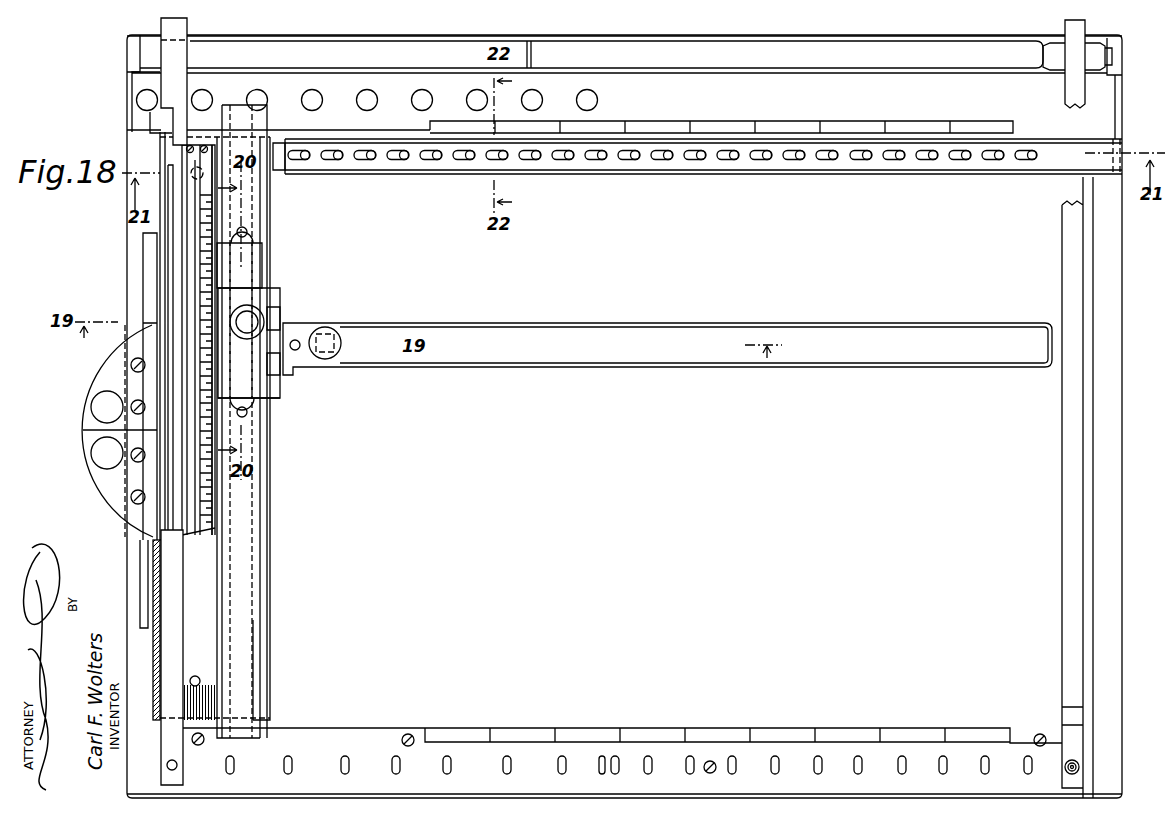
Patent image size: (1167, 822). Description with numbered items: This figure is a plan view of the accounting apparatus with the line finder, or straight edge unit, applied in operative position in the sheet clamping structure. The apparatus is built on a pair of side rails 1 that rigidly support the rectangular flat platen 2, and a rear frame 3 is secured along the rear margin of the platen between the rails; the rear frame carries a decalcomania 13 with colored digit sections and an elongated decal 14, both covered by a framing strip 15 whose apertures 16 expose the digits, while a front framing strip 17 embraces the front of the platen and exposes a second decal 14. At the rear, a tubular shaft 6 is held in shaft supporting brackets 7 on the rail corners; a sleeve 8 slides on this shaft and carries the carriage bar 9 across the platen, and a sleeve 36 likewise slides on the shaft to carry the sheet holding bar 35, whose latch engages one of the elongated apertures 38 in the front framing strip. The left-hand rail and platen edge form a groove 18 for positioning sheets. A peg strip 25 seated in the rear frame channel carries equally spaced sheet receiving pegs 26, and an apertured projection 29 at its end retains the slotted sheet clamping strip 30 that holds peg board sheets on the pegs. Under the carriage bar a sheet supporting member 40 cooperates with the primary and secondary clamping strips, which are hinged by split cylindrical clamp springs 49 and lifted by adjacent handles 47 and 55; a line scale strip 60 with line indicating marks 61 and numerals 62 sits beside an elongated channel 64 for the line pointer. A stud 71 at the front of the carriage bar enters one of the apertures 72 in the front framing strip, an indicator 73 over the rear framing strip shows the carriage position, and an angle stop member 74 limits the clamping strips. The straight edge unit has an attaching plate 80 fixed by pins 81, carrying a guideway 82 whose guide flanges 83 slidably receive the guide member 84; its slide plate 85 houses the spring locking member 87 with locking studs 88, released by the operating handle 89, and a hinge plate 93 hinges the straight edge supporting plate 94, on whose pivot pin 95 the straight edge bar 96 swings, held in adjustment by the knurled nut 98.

The side rails 1 is at (1112, 352).
The platen 2 is at (1043, 456).
The rear frame 3 is at (909, 35).
The tubular shaft 6 is at (855, 52).
The shaft supporting brackets 7 is at (130, 47).
The sleeve 8 is at (318, 42).
The carriage bar 9 is at (187, 25).
The decalcomania 13 is at (426, 98).
The decal 14 is at (605, 737).
The framing strip 15 is at (736, 62).
The apertures 16 is at (414, 107).
The front framing strip 17 is at (351, 738).
The groove 18 is at (152, 578).
The peg strip 25 is at (742, 160).
The sheet receiving pegs 26 is at (592, 160).
The apertured projection 29 is at (290, 168).
The sheet clamping strip 30 is at (440, 162).
The sheet holding bar 35 is at (1068, 487).
The sleeve 36 is at (1058, 65).
The elongated apertures 38 is at (776, 757).
The sheet supporting member 40 is at (213, 491).
The handle 47 is at (102, 387).
The split cylindrical clamp springs 49 is at (150, 262).
The handle 55 is at (92, 442).
The line scale strip 60 is at (190, 229).
The line indicating marks 61 is at (206, 368).
The numerals 62 is at (198, 503).
The elongated channel 64 is at (177, 534).
The stud 71 is at (177, 765).
The apertures 72 is at (341, 760).
The indicator 73 is at (137, 86).
The angle stop member 74 is at (163, 126).
The attaching plate 80 is at (199, 575).
The pins 81 is at (200, 679).
The guideway 82 is at (247, 602).
The guide flanges 83 is at (217, 624).
The guide member 84 is at (265, 296).
The slide plate 85 is at (263, 253).
The spring locking member 87 is at (253, 405).
The locking studs 88 is at (250, 232).
The operating handle 89 is at (263, 318).
The hinge plate 93 is at (268, 387).
The straight edge supporting plate 94 is at (303, 331).
The pivot pin 95 is at (297, 351).
The straight edge bar 96 is at (495, 348).
The knurled nut 98 is at (337, 338).